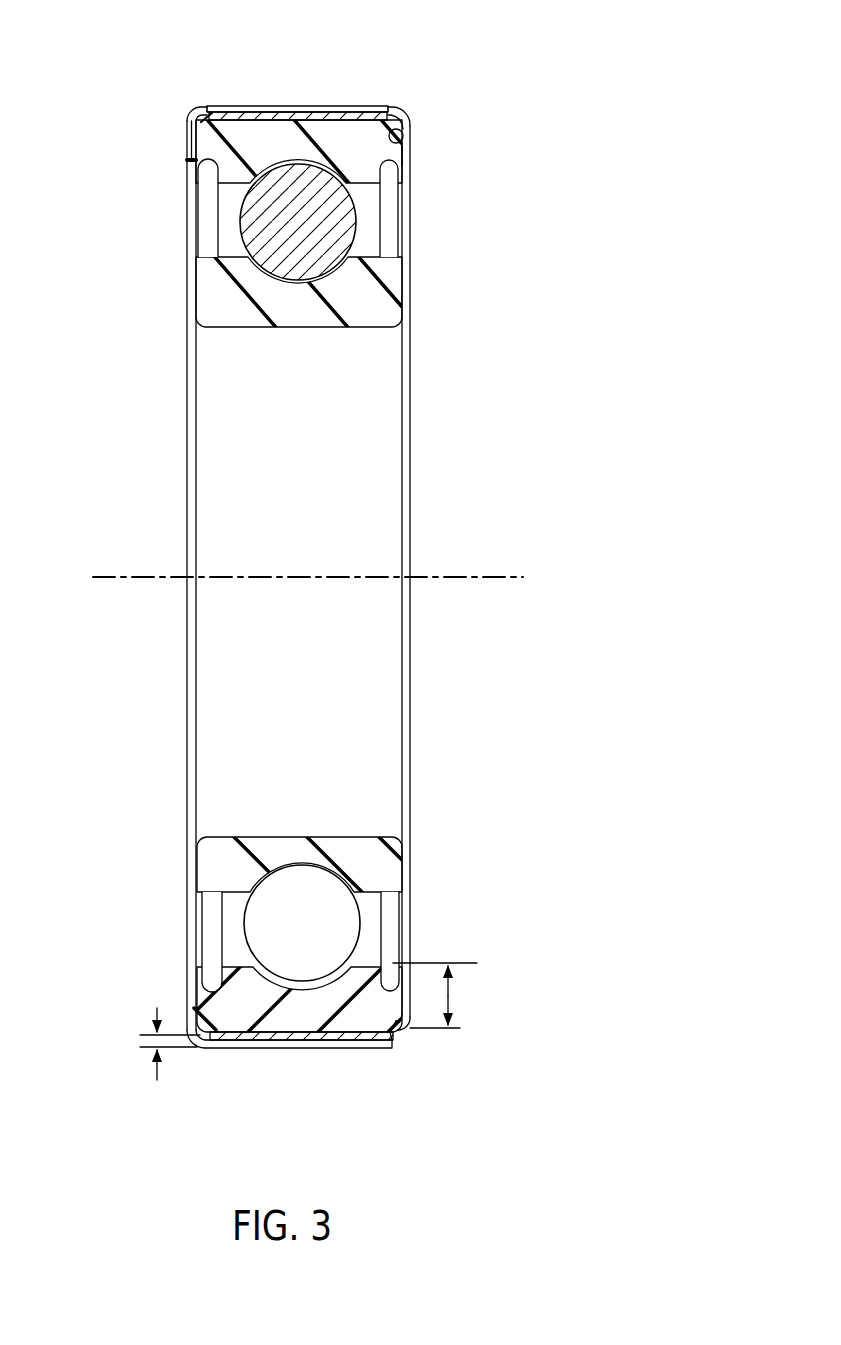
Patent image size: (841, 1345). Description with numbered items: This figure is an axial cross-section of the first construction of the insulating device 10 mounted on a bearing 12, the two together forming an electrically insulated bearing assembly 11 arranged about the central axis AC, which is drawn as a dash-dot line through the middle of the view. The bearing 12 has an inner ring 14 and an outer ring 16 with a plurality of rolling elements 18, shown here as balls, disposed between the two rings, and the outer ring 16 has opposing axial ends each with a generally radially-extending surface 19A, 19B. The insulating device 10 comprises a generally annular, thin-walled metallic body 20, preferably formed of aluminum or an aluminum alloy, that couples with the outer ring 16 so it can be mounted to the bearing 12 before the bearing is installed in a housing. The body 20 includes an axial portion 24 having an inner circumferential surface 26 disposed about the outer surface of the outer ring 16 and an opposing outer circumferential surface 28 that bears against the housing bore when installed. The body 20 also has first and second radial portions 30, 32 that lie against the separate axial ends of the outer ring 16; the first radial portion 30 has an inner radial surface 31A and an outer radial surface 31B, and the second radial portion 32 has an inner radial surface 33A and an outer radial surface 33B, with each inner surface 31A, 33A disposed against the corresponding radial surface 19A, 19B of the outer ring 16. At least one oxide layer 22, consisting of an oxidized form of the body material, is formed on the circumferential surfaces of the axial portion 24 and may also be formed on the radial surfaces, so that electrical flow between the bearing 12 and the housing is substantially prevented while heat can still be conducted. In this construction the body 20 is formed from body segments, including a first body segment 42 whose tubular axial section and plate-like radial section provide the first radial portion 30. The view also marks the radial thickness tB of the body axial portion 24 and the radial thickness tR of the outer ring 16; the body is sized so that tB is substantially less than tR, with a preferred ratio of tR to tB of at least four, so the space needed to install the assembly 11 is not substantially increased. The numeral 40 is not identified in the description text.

The insulating device 10 is at (140, 109).
The electrically insulated bearing assembly 11 is at (108, 262).
The bearing 12 is at (375, 340).
The inner ring 14 is at (222, 872).
The outer ring 16 is at (373, 1048).
The rolling elements 18 is at (325, 240).
The radially-extending surface 19A is at (411, 1000).
The radially-extending surface 19B is at (194, 1000).
The metallic body 20 is at (376, 94).
The oxide layer 22 is at (393, 1006).
The axial portion 24 is at (302, 102).
The inner circumferential surface 26 is at (242, 124).
The outer circumferential surface 28 is at (341, 106).
The first radial portion 30 is at (418, 133).
The inner radial surface 31A is at (403, 126).
The outer radial surface 31B is at (404, 158).
The second radial portion 32 is at (178, 145).
The inner radial surface 33A is at (201, 134).
The outer radial surface 33B is at (186, 153).
The shell side wall 40 is at (407, 447).
The first body segment 42 is at (183, 446).
The central axis AC is at (485, 577).
The radial thickness of the outer ring tR is at (448, 963).
The radial thickness of the body axial portion tB is at (157, 1008).